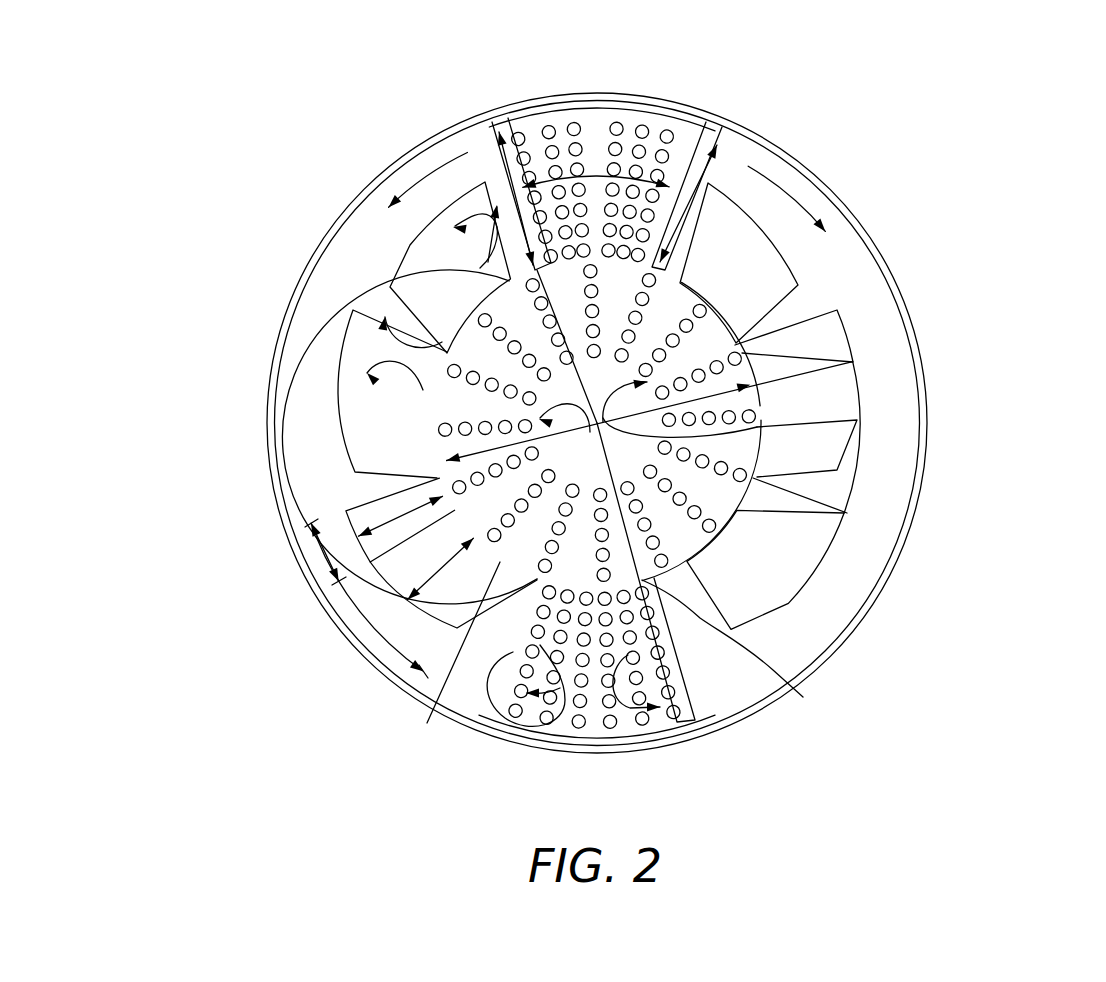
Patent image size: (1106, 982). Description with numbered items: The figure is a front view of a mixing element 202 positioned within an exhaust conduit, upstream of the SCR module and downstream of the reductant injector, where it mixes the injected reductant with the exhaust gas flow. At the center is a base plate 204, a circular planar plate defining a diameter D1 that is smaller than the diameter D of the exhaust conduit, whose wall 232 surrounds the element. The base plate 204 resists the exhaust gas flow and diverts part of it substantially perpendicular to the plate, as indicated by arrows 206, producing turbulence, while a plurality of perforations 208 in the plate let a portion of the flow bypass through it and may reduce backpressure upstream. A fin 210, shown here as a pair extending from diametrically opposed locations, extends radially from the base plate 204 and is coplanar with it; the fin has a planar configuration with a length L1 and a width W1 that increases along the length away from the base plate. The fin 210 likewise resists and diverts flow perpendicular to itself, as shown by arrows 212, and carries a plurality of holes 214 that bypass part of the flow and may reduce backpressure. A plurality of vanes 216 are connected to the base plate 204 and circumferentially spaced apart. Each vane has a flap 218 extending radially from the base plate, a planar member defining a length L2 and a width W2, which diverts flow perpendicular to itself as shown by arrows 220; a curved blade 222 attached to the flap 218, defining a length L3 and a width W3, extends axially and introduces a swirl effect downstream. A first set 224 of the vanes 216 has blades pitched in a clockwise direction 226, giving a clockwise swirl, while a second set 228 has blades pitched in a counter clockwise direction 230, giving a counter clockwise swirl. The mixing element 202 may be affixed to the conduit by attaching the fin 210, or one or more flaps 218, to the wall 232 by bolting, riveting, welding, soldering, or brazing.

The mixing element 202 is at (985, 100).
The base plate 204 is at (838, 309).
The arrows 206 is at (935, 470).
The perforations 208 is at (783, 600).
The fin 210 is at (660, 133).
The arrows 212 is at (545, 733).
The holes 214 is at (548, 122).
The vanes 216 is at (876, 372).
The flap 218 is at (355, 332).
The arrows 220 is at (493, 123).
The blade 222 is at (347, 390).
The first set of the vanes 224 is at (896, 407).
The clockwise direction 226 is at (812, 205).
The second set of the vanes 228 is at (317, 552).
The counter clockwise direction 230 is at (433, 168).
The wall 232 is at (886, 262).
The diameter D is at (592, 399).
The diameter D1 is at (762, 400).
The width W1 is at (593, 178).
The width W2 is at (313, 552).
The width W3 is at (465, 542).
The length L1 is at (722, 132).
The length L2 is at (393, 518).
The length L3 is at (383, 643).